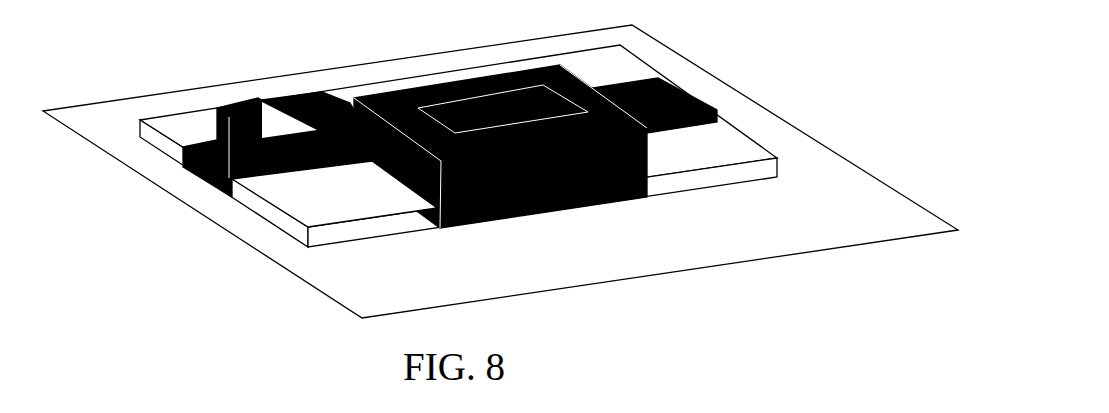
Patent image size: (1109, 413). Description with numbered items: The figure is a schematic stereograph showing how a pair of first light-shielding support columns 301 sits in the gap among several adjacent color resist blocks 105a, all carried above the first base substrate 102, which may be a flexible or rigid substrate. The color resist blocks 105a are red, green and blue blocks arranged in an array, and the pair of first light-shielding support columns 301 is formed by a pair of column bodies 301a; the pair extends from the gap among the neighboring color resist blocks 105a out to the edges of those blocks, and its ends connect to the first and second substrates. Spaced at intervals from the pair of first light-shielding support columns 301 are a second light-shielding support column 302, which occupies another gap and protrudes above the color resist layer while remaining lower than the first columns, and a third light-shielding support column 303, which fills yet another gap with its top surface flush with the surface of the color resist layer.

The first base substrate 102 is at (830, 195).
The color resist blocks 105a is at (723, 138).
The pair of first light-shielding support columns 301 is at (563, 150).
The column bodies 301a is at (589, 202).
The second light-shielding support column 302 is at (222, 103).
The third light-shielding support column 303 is at (678, 92).